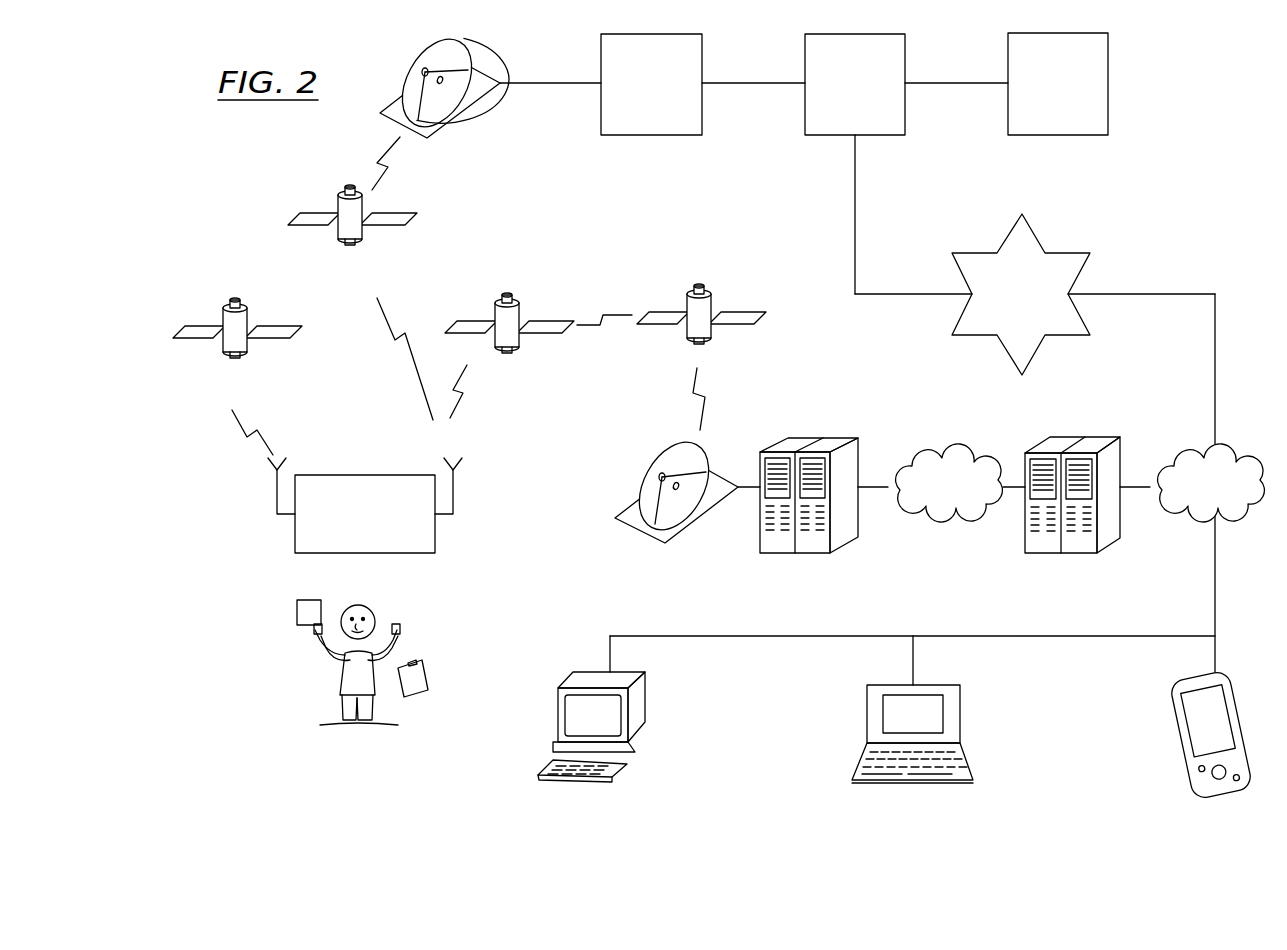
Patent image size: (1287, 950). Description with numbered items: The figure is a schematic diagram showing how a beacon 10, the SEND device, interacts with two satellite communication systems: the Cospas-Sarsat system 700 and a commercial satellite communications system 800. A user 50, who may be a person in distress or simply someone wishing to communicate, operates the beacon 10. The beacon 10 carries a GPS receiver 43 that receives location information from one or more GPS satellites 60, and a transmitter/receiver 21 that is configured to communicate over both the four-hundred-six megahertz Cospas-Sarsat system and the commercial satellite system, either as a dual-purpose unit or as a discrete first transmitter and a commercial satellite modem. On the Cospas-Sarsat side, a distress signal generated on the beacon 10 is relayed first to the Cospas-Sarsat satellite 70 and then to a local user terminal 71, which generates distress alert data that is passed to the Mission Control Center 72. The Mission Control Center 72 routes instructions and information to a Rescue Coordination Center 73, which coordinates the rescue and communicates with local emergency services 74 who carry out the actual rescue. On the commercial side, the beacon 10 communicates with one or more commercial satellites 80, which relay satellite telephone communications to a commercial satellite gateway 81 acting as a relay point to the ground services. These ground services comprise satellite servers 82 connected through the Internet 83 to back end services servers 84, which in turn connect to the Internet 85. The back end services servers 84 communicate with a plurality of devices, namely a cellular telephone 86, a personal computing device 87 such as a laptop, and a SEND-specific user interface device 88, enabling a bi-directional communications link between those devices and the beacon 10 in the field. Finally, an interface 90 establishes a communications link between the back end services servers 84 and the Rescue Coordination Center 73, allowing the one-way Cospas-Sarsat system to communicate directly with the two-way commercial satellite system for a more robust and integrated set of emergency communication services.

The beacon 10 is at (372, 475).
The first transmitter 21 is at (453, 490).
The receiver 43 is at (277, 487).
The user 50 is at (400, 625).
The GPS satellite system 60 is at (233, 300).
The Cospas-Sarsat satellite 70 is at (344, 192).
The local user terminal (LUT) 71 is at (395, 103).
The Mission Control Center (MCC) 72 is at (601, 62).
The Rescue Coordination Center (RCC) 73 is at (805, 62).
The local emergency services 74 is at (1008, 62).
The commercial satellite 80 is at (512, 296).
The commercial satellite gateway 81 is at (700, 455).
The satellite servers 82 is at (830, 440).
The Internet 83 is at (945, 455).
The back end services servers 84 is at (1097, 440).
The Internet 85 is at (1232, 457).
The cellular telephone 86 is at (1178, 690).
The personal computing device 87 is at (955, 685).
The 406-SEND-specific user interface device 88 is at (648, 692).
The interface 90 is at (1068, 253).
The COSPAS-SARSAT system 700 is at (1178, 84).
The commercial satellite system 800 is at (1222, 263).